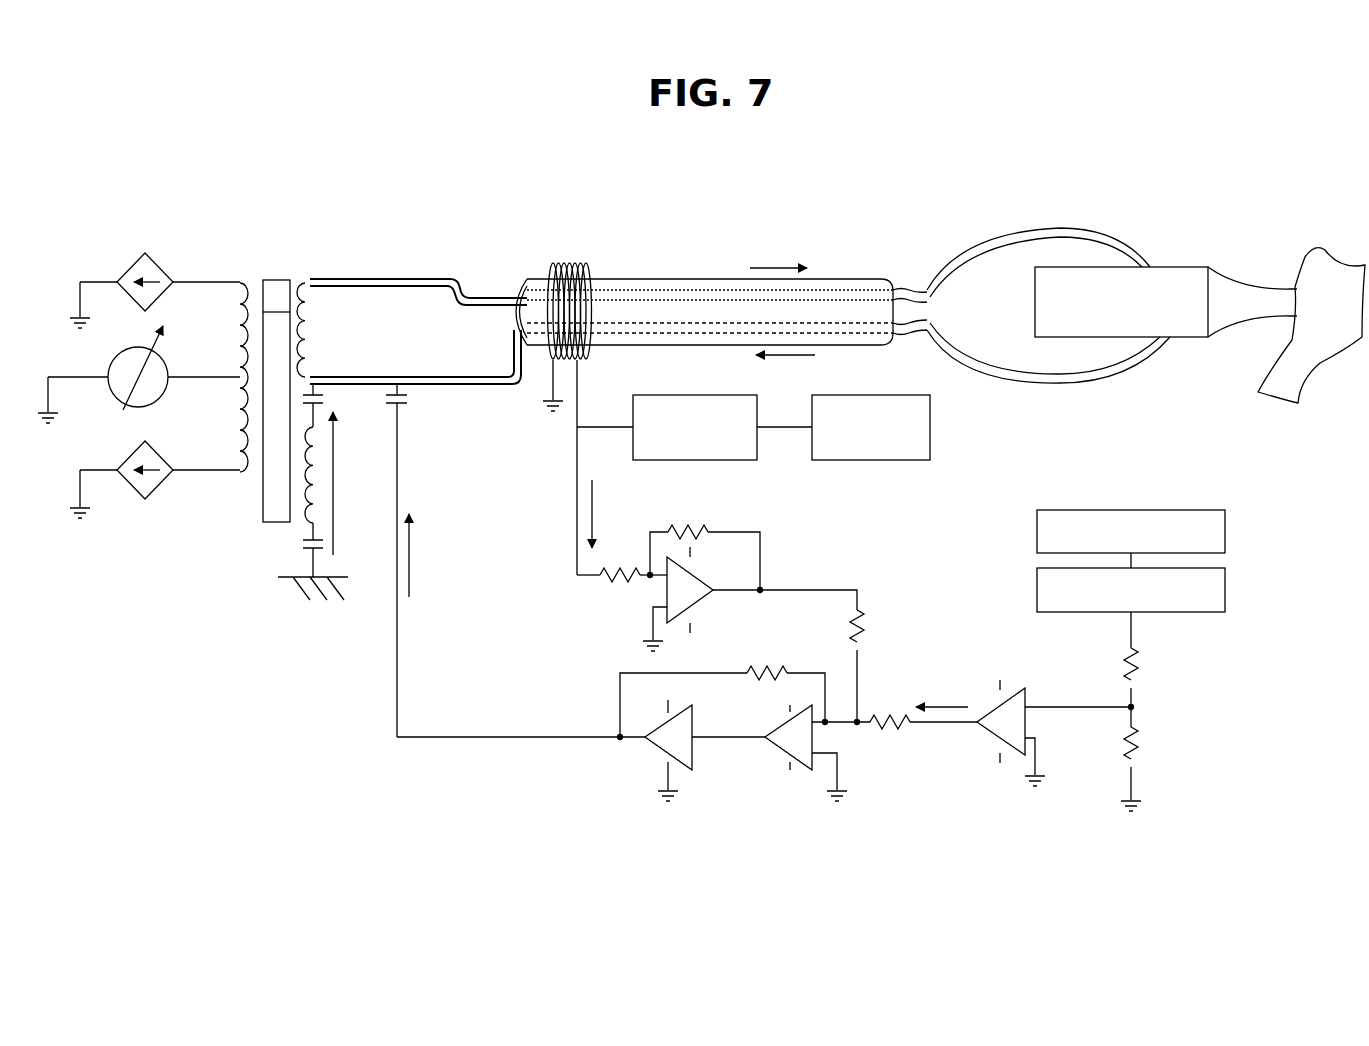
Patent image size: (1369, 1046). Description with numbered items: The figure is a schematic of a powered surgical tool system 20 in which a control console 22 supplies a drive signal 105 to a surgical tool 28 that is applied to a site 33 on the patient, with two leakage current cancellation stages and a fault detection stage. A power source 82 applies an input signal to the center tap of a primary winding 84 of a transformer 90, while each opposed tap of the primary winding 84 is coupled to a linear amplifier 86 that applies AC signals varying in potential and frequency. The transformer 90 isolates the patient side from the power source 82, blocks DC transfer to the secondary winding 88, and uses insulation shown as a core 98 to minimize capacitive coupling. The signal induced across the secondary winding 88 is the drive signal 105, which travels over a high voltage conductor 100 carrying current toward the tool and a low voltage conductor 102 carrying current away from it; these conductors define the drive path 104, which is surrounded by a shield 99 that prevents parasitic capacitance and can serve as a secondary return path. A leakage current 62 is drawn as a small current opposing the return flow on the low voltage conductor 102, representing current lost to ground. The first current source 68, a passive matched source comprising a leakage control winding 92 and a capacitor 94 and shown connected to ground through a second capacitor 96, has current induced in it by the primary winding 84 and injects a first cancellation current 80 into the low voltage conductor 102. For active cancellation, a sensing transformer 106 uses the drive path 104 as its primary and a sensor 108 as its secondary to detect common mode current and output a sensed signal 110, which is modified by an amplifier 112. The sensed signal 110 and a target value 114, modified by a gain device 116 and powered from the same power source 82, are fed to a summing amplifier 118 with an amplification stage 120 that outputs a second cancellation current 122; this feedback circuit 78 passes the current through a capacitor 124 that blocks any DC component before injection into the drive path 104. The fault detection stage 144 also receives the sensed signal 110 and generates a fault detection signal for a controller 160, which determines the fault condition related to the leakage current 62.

The powered surgical tool system 20 is at (1079, 181).
The control console 22 is at (95, 230).
The surgical tool 28 is at (1185, 267).
The site 33 is at (1337, 277).
The leakage current 62 is at (785, 370).
The first current source 68 is at (288, 558).
The feedback control circuit 78 is at (456, 760).
The first cancellation current 80 is at (337, 475).
The power source 82 is at (133, 347).
The primary winding 84 is at (235, 340).
The linear amplifier 86 is at (153, 257).
The secondary winding 88 is at (298, 287).
The transformer 90 is at (275, 262).
The leakage control winding 92 is at (303, 513).
The capacitor 94 is at (320, 405).
The capacitor 96 is at (325, 548).
The core 98 is at (276, 368).
The shield 99 is at (537, 278).
The high voltage conductor 100 is at (433, 279).
The low voltage conductor 102 is at (427, 375).
The drive path 104 is at (400, 288).
The drive signal 105 is at (768, 352).
The transformer 106 is at (550, 254).
The sensor 108 is at (588, 268).
The sensed signal 110 is at (596, 488).
The amplifier 112 is at (706, 608).
The target value 114 is at (948, 700).
The gain device 116 is at (1037, 689).
The summing amplifier 118 is at (773, 759).
The amplification stage 120 is at (650, 759).
The second cancellation current 122 is at (412, 553).
The capacitor 124 is at (405, 410).
The fault detection stage 144 is at (733, 460).
The controller 160 is at (875, 460).